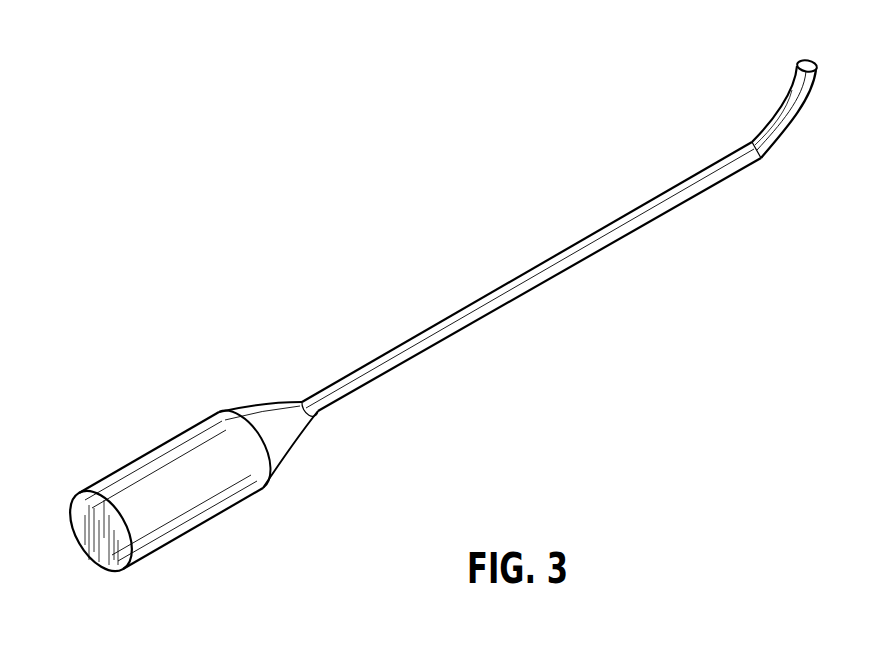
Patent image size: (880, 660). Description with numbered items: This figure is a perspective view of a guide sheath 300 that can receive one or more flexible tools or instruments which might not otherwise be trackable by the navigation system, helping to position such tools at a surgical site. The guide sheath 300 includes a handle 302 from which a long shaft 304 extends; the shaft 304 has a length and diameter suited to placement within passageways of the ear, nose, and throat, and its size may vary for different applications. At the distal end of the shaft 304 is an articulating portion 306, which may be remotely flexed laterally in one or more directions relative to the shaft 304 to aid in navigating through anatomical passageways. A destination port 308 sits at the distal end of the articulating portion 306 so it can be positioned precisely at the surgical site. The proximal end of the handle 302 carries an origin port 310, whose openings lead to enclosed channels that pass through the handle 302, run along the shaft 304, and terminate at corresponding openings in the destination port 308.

The guide sheath 300 is at (518, 383).
The handle 302 is at (150, 465).
The shaft 304 is at (512, 283).
The articulating portion 306 is at (781, 152).
The destination port 308 is at (806, 58).
The origin port 310 is at (83, 548).